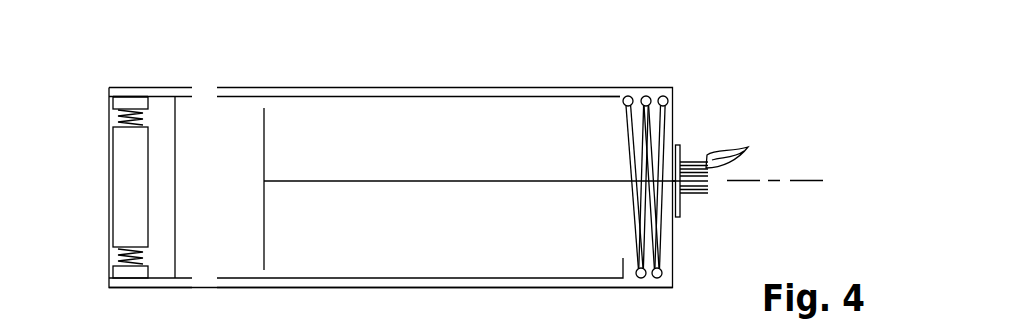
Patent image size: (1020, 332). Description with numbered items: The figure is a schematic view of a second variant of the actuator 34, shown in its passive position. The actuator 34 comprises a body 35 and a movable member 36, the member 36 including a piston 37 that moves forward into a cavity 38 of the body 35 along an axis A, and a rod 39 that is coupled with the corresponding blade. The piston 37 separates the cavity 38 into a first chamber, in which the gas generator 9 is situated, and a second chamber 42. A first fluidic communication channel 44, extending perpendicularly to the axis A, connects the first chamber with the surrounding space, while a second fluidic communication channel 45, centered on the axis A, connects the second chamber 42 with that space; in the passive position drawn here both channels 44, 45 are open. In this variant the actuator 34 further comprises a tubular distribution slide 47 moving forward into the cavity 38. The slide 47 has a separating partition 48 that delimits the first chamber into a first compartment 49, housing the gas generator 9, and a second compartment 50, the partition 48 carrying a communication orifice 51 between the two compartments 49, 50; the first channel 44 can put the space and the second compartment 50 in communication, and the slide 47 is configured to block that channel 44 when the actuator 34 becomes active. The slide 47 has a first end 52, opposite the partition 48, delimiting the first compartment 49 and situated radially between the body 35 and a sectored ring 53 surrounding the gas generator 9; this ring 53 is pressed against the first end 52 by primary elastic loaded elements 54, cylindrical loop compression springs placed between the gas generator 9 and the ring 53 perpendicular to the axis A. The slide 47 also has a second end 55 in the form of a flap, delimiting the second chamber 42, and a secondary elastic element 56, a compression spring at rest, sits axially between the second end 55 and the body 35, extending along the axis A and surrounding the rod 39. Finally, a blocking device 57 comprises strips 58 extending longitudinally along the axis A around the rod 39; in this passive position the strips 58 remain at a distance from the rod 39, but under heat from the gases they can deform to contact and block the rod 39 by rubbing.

The gas generator 9 is at (128, 202).
The actuator 34 is at (398, 68).
The body 35 is at (181, 85).
The movable member 36 is at (357, 179).
The piston 37 is at (265, 128).
The cavity 38 is at (309, 130).
The rod 39 is at (450, 177).
The second chamber 42 is at (420, 242).
The first fluidic communication channel 44 is at (203, 97).
The second fluidic communication channel 45 is at (676, 197).
The tubular distribution slide 47 is at (233, 93).
The separating partition 48 is at (176, 156).
The first compartment 49 is at (160, 232).
The second compartment 50 is at (177, 256).
The communication orifice 51 is at (175, 185).
The first end 52 is at (129, 96).
The sectored ring 53 is at (113, 102).
The primary elastic loaded element 54 is at (113, 118).
The second end 55 is at (622, 108).
The secondary elastic element 56 is at (662, 115).
The blocking device 57 is at (688, 144).
The strips 58 is at (734, 163).
The axis A is at (792, 181).